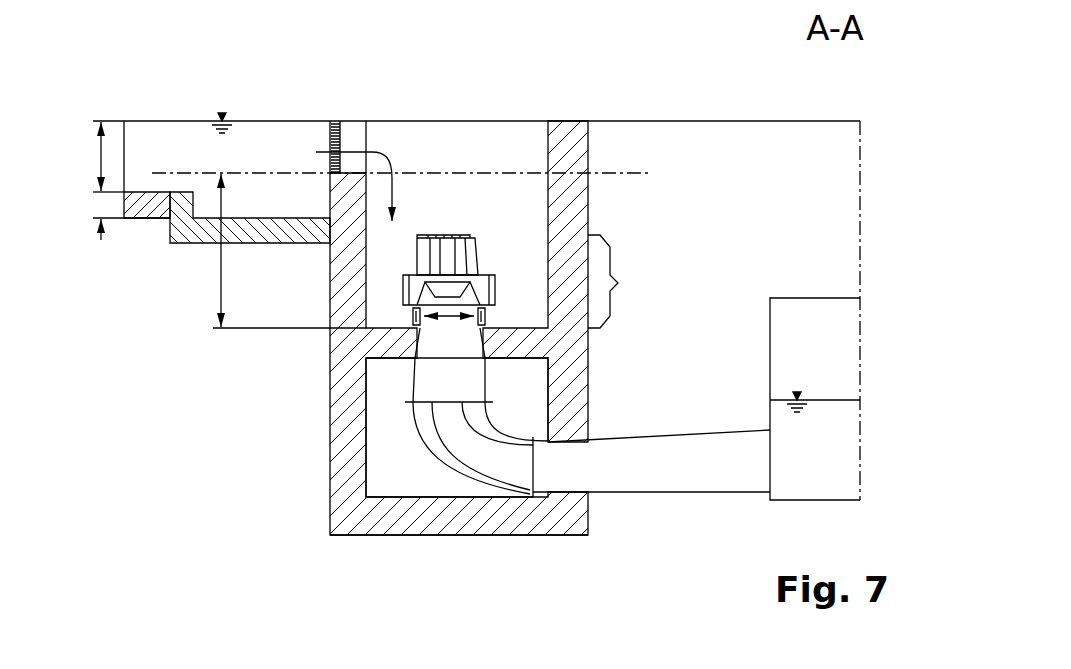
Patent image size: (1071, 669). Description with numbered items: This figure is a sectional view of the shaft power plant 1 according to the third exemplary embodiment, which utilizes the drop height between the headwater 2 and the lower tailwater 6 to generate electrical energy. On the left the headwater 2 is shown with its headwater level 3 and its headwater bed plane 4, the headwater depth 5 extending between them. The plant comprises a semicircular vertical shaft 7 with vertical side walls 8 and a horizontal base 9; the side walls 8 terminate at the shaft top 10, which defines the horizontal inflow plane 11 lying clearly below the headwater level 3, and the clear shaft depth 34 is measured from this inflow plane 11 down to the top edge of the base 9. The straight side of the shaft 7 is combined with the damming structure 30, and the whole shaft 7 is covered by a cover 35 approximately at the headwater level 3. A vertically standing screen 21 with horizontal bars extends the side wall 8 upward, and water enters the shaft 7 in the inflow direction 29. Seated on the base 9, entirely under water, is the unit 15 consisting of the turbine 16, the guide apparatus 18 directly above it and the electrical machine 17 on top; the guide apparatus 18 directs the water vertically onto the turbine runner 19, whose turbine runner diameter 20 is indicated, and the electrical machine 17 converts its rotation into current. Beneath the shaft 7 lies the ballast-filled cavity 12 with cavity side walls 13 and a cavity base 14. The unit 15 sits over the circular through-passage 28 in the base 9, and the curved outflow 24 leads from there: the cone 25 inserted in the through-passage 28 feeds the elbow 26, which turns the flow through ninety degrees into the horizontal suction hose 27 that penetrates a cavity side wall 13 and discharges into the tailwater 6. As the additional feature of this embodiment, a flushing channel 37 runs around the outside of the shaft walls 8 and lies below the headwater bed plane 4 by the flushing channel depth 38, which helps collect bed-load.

The shaft power plant 1 is at (646, 88).
The headwater 2 is at (196, 130).
The headwater level 3 is at (245, 118).
The headwater bed plane 4 is at (135, 190).
The headwater depth 5 is at (101, 150).
The tailwater 6 is at (830, 410).
The vertical shaft 7 is at (647, 229).
The vertical side walls 8 is at (582, 202).
The base 9 is at (385, 357).
The shaft top 10 is at (353, 172).
The horizontal inflow plane 11 is at (311, 167).
The cavity 12 is at (380, 440).
The cavity side walls 13 is at (345, 475).
The cavity base 14 is at (455, 522).
The unit 15 is at (619, 281).
The turbine 16 is at (487, 318).
The electrical machine 17 is at (482, 262).
The guide apparatus 18 is at (497, 290).
The turbine runner 19 is at (467, 330).
The turbine runner diameter 20 is at (441, 328).
The screen 21 is at (334, 128).
The outflow 24 is at (616, 426).
The cone 25 is at (487, 372).
The elbow 26 is at (492, 418).
The suction hose 27 is at (735, 430).
The through-passage 28 is at (418, 362).
The inflow direction 29 is at (396, 188).
The damming structure 30 is at (624, 162).
The clear shaft depth 34 is at (221, 272).
The cover 35 is at (487, 120).
The flushing channel 37 is at (285, 232).
The flushing channel depth 38 is at (101, 205).